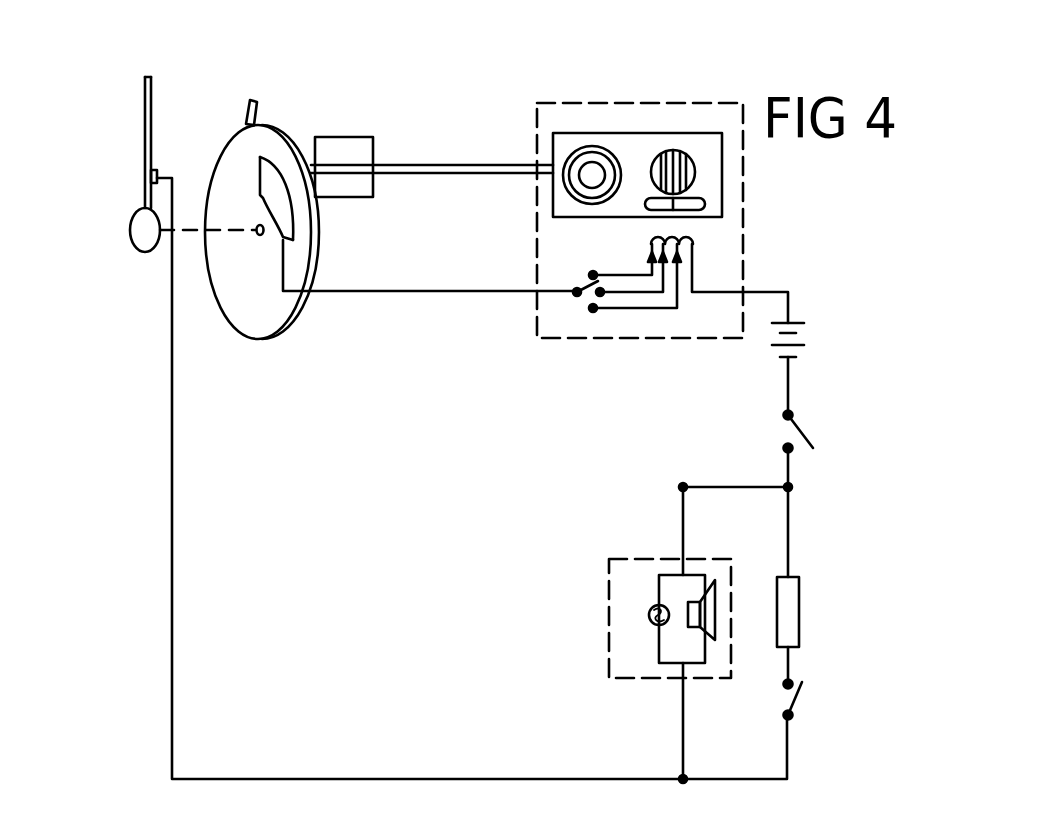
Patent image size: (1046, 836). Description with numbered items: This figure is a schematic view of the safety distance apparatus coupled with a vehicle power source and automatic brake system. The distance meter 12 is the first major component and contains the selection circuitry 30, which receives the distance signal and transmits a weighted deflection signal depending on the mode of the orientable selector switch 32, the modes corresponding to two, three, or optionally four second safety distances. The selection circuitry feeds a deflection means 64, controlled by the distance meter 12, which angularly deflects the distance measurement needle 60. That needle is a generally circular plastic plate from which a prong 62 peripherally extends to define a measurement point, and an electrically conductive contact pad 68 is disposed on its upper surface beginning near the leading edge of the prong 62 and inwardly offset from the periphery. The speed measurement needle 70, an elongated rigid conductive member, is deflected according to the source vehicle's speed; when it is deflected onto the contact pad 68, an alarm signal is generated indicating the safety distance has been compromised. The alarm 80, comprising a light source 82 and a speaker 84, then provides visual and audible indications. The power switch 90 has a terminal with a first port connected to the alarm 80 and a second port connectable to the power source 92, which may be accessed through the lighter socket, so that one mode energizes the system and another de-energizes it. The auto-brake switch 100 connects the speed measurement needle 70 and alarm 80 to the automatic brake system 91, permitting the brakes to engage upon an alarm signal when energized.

The distance meter 12 is at (673, 102).
The selection circuitry 30 is at (696, 240).
The selector switch 32 is at (597, 315).
The distance measurement needle 60 is at (278, 143).
The prong 62 is at (248, 100).
The deflection means 64 is at (432, 149).
The contact pad 68 is at (284, 220).
The speed measurement needle 70 is at (143, 118).
The alarm 80 is at (630, 641).
The light source 82 is at (643, 615).
The speaker 84 is at (721, 573).
The power switch 90 is at (810, 430).
The automatic brake system 91 is at (796, 605).
The power source 92 is at (774, 338).
The auto-brake switch 100 is at (800, 706).